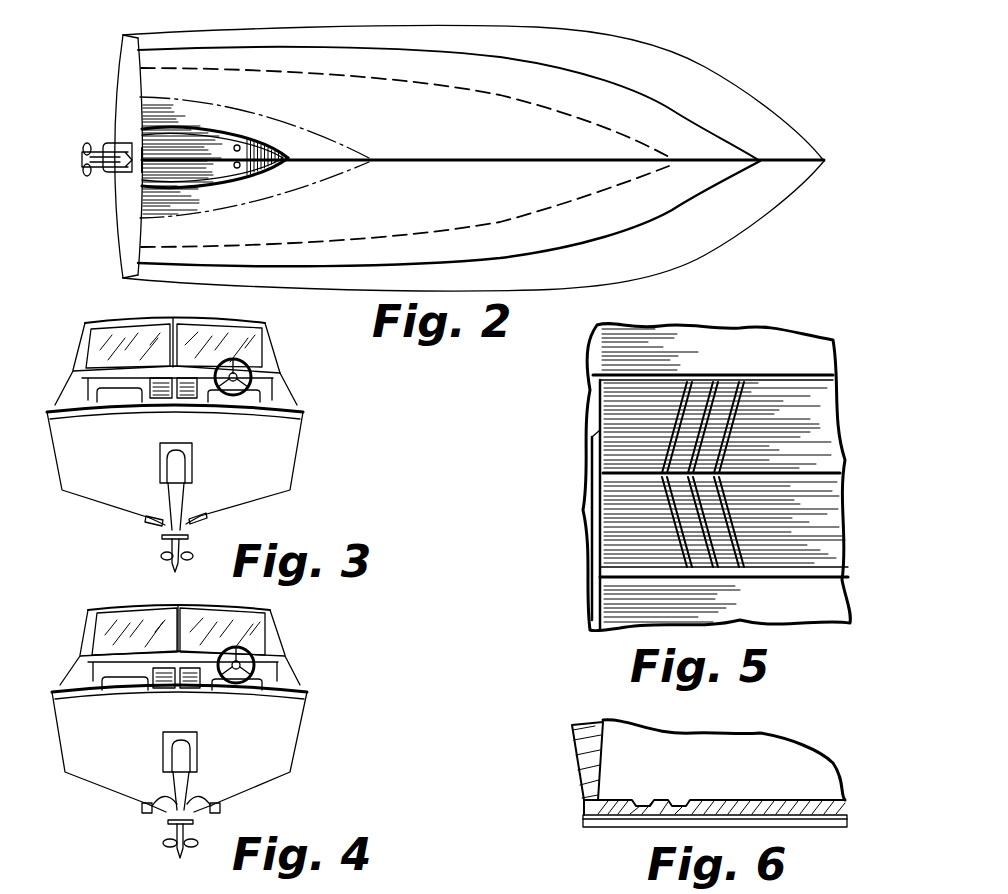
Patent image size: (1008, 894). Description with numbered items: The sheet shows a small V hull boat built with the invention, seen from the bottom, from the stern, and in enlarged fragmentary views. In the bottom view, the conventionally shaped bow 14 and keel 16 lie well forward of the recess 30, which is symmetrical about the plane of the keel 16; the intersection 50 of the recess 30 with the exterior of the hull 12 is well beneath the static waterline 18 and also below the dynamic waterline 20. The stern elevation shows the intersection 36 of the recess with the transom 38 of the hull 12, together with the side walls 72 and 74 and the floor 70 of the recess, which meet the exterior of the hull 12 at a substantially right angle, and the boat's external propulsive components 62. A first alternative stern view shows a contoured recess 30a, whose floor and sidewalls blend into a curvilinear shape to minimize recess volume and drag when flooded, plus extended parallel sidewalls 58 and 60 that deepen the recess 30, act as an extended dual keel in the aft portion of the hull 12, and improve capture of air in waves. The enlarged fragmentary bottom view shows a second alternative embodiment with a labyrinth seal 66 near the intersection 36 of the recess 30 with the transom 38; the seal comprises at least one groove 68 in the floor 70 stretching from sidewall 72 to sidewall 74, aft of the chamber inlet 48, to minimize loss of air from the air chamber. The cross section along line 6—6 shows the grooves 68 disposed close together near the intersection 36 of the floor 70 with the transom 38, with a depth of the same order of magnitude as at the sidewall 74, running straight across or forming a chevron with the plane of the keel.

In FIG. 2, the hull 12 is at (421, 127).
In FIG. 3, the hull 12 is at (300, 453).
In FIG. 4, the hull 12 is at (296, 737).
In FIG. 2, the bow 14 is at (841, 163).
In FIG. 2, the keel 16 is at (478, 163).
In FIG. 2, the static waterline 18 is at (560, 117).
In FIG. 2, the dynamic waterline 20 is at (272, 113).
In FIG. 2, the recess 30 is at (189, 170).
In FIG. 5, the recess 30 is at (566, 544).
In FIG. 4, the contoured recess 30a is at (162, 796).
In FIG. 2, the intersection of the recess with the transom 36 is at (138, 175).
In FIG. 3, the intersection of the recess with the transom 36 is at (157, 527).
In FIG. 4, the intersection of the recess with the transom 36 is at (163, 813).
In FIG. 5, the intersection of the recess with the transom 36 is at (593, 405).
In FIG. 6, the intersection of the recess with the transom 36 is at (587, 815).
In FIG. 2, the transom 38 is at (123, 98).
In FIG. 3, the transom 38 is at (116, 460).
In FIG. 4, the transom 38 is at (111, 741).
In FIG. 5, the transom 38 is at (585, 362).
In FIG. 6, the transom 38 is at (575, 762).
In FIG. 2, the chamber inlet 48 is at (240, 168).
In FIG. 2, the intersection of the recess with the exterior of the hull 50 is at (222, 130).
In FIG. 4, the extended parallel sidewall 58 is at (140, 808).
In FIG. 4, the extended parallel sidewall 60 is at (222, 805).
In FIG. 2, the external propulsive components 62 is at (78, 153).
In FIG. 4, the external propulsive components 62 is at (167, 848).
In FIG. 5, the labyrinth seal 66 is at (733, 420).
In FIG. 6, the labyrinth seal 66 is at (695, 796).
In FIG. 5, the groove 68 is at (713, 375).
In FIG. 6, the groove 68 is at (683, 813).
In FIG. 3, the floor 70 is at (192, 515).
In FIG. 5, the floor 70 is at (828, 445).
In FIG. 6, the floor 70 is at (850, 813).
In FIG. 3, the side wall 72 is at (207, 510).
In FIG. 5, the side wall 72 is at (768, 375).
In FIG. 3, the side wall 74 is at (147, 514).
In FIG. 5, the side wall 74 is at (753, 572).
In FIG. 6, the side wall 74 is at (813, 820).
In FIG. 5, the section line 6— 6 is at (593, 490).